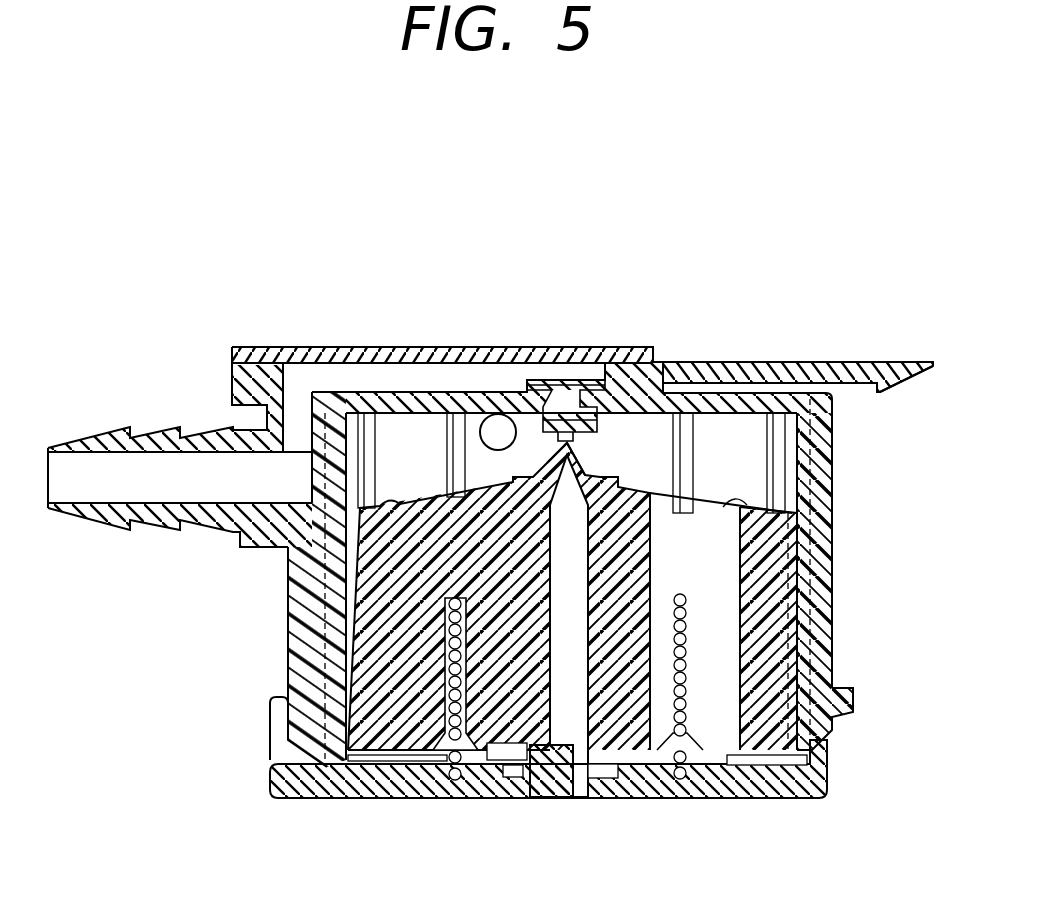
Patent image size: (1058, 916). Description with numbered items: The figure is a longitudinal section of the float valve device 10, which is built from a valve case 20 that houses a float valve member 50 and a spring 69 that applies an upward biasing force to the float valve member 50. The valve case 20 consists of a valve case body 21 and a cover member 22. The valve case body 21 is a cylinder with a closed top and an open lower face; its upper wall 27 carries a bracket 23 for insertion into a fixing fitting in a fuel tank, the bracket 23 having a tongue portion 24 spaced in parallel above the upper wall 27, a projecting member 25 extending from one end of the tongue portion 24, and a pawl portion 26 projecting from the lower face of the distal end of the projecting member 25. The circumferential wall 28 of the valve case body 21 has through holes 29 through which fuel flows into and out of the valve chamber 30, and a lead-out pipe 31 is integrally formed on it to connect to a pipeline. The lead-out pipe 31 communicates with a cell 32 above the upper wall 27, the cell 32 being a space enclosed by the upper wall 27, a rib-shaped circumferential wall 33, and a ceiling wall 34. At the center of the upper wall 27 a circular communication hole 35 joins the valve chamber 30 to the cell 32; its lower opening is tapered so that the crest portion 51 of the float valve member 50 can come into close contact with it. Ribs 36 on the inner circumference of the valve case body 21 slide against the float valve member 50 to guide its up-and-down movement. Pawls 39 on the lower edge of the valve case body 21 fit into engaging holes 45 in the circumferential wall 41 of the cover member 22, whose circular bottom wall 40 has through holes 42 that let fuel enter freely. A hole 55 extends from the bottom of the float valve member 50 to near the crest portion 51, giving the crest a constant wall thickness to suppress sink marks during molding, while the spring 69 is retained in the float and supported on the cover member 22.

The float valve device 10 is at (216, 233).
The valve case 20 is at (445, 615).
The valve case body 21 is at (288, 637).
The cover member 22 is at (477, 804).
The bracket 23 is at (793, 342).
The tongue portion 24 is at (700, 362).
The projecting member 25 is at (890, 362).
The pawl portion 26 is at (877, 395).
The upper wall 27 is at (408, 392).
The circumferential wall 28 is at (825, 507).
The through holes 29 is at (498, 414).
The valve chamber 30 is at (428, 468).
The lead-out pipe 31 is at (113, 438).
The cell 32 is at (290, 347).
The circumferential wall 33 is at (232, 393).
The ceiling wall 34 is at (326, 347).
The communication hole 35 is at (563, 395).
The ribs 36 is at (700, 457).
The pawls 39 is at (848, 722).
The bottom wall 40 is at (548, 800).
The circumferential wall 41 is at (270, 743).
The through holes 42 is at (698, 800).
The engaging holes 45 is at (822, 768).
The float valve member 50 is at (408, 720).
The crest portion 51 is at (577, 447).
The hole 55 is at (568, 712).
The spring 69 is at (462, 780).